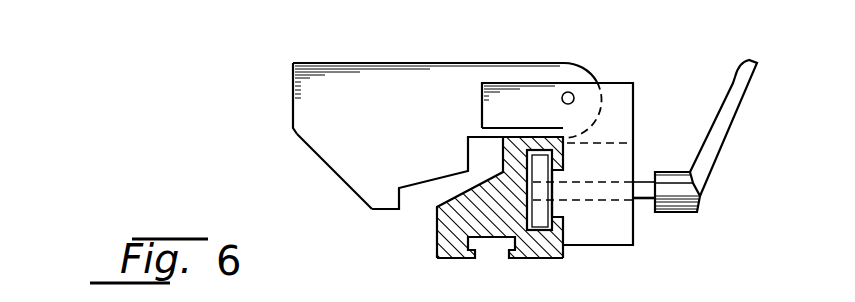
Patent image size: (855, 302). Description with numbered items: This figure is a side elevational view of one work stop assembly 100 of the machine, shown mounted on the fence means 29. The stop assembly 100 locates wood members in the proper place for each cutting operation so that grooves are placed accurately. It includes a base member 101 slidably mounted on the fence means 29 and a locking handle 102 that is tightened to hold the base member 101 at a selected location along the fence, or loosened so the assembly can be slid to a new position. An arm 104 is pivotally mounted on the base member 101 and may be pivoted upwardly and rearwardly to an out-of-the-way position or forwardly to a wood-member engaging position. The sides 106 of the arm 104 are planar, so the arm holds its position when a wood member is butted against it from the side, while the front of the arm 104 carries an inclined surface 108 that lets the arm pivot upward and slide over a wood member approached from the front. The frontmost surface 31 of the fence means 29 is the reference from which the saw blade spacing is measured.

The work stop assembly 100 is at (623, 62).
The base member 101 is at (628, 118).
The locking handle 102 is at (738, 113).
The arm 104 is at (401, 121).
The side of the stop assembly arm 106 is at (455, 78).
The inclined surface 108 is at (330, 168).
The fence means 29 is at (445, 215).
The frontmost surface of the fence means 31 is at (437, 238).